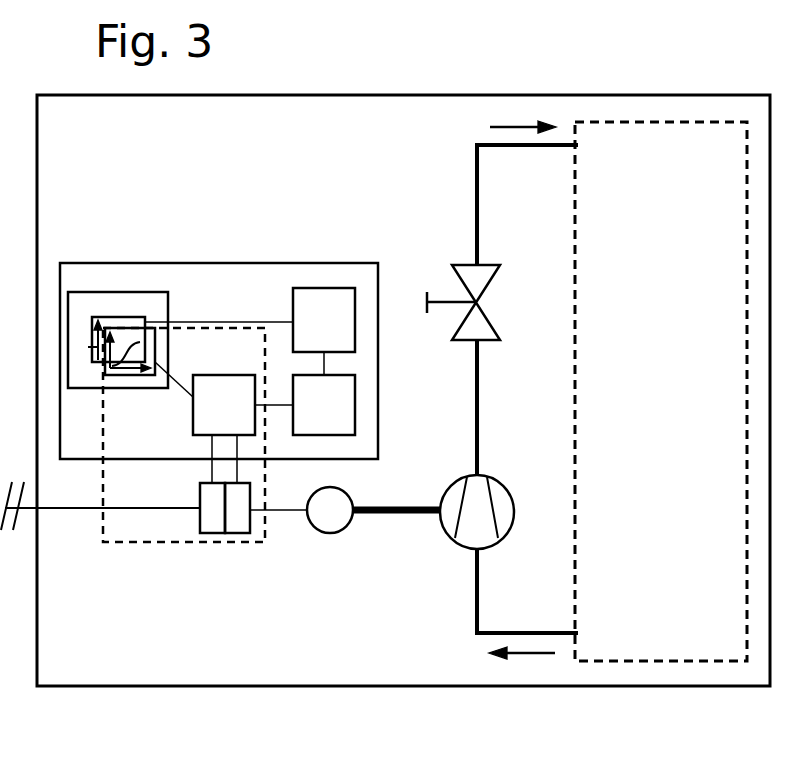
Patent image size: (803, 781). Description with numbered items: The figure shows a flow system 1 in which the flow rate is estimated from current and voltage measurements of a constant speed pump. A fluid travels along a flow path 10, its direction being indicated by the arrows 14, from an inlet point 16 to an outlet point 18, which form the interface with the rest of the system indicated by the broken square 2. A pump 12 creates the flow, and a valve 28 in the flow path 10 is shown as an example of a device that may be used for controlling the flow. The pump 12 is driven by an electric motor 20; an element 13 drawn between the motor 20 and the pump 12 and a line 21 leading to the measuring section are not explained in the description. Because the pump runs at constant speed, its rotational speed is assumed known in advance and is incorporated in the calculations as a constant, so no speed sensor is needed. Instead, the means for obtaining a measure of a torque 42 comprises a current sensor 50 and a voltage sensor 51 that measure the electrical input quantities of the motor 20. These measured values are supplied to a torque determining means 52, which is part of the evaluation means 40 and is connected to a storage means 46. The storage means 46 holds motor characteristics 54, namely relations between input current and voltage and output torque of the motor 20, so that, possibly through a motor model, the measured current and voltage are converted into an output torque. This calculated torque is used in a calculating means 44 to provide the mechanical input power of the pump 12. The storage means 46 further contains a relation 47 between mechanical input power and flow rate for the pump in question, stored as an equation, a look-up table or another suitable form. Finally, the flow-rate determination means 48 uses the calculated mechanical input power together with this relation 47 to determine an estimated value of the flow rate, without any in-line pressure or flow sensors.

The flow system 1 is at (738, 688).
The broken square 2 is at (663, 663).
The flow path 10 is at (478, 210).
The pump 12 is at (483, 537).
The drive shaft 13 is at (360, 522).
The arrows 14 is at (508, 126).
The inlet point 16 is at (578, 635).
The outlet point 18 is at (578, 146).
The electric motor 20 is at (333, 533).
The supply line 21 is at (88, 510).
The valve 28 is at (483, 333).
The evaluation means 40 is at (165, 272).
The means for obtaining a measure of a torque 42 is at (152, 544).
The calculating means 44 is at (355, 412).
The storage means 46 is at (120, 293).
The relation between mechanical input power and flow rate 47 is at (97, 365).
The flow-rate determination means 48 is at (292, 312).
The current sensor 50 is at (210, 533).
The voltage sensor 51 is at (240, 533).
The torque determining means 52 is at (198, 378).
The motor characteristics 54 is at (137, 378).